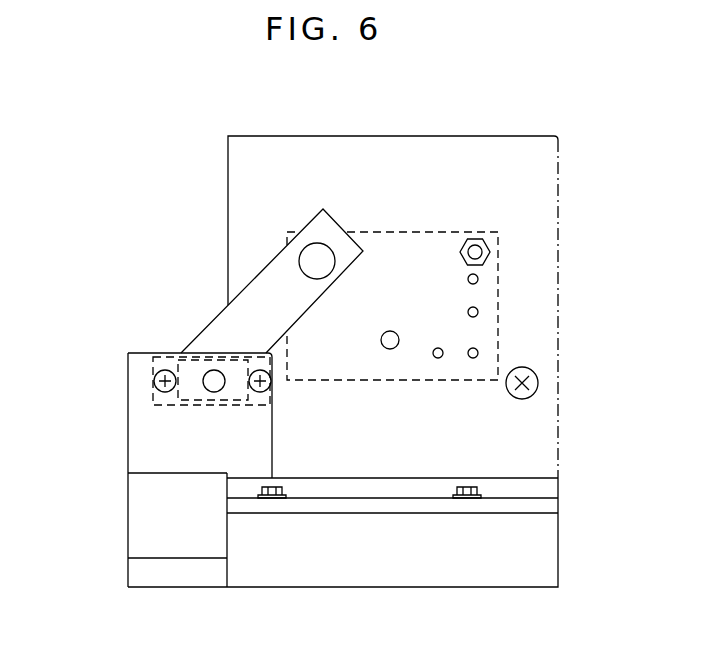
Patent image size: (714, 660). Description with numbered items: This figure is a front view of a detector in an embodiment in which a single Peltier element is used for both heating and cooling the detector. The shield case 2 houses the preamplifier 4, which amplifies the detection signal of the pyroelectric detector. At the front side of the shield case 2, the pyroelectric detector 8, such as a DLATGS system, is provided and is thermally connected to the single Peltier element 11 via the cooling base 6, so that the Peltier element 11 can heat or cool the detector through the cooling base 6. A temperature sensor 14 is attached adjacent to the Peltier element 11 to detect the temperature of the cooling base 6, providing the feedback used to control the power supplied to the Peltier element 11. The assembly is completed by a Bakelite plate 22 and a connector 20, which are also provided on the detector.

The shield case 2 is at (493, 136).
The preamplifier 4 is at (402, 232).
The cooling base 6 is at (218, 318).
The pyroelectric detector 8 is at (305, 263).
The Peltier element 11 is at (188, 372).
The temperature sensor 14 is at (214, 388).
The connector 20 is at (492, 254).
The Bakelite plate 22 is at (540, 561).